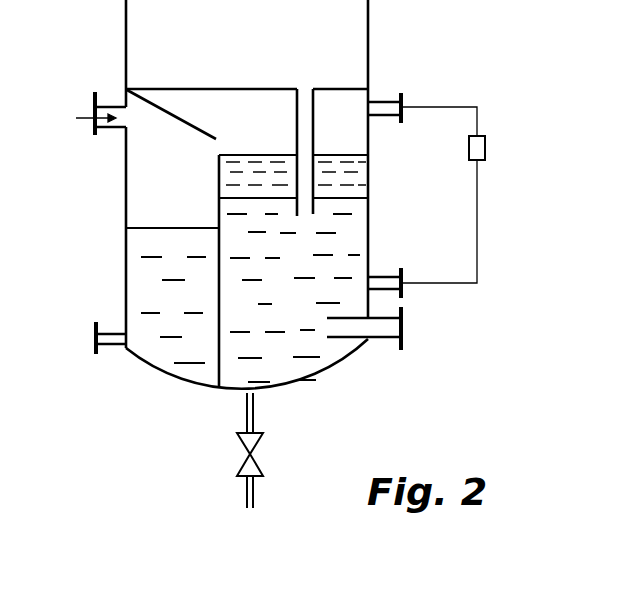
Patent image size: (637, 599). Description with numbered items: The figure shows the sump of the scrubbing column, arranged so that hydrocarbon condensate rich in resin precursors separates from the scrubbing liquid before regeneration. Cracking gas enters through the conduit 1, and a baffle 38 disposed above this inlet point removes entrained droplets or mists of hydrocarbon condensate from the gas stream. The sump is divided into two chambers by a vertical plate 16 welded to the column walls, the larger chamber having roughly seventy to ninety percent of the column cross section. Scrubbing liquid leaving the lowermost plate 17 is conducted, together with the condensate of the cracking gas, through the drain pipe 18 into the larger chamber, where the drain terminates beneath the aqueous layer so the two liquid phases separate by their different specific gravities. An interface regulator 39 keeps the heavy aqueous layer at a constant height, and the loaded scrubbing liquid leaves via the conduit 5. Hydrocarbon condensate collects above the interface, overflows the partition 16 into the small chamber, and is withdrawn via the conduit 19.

The conduit 1 is at (111, 133).
The conduit 5 is at (385, 340).
The vertical plate 16 is at (220, 313).
The lowermost plate 17 is at (230, 88).
The drain pipe 18 is at (304, 119).
The conduit 19 is at (110, 349).
The baffle 38 is at (178, 117).
The interface regulator 39 is at (486, 147).